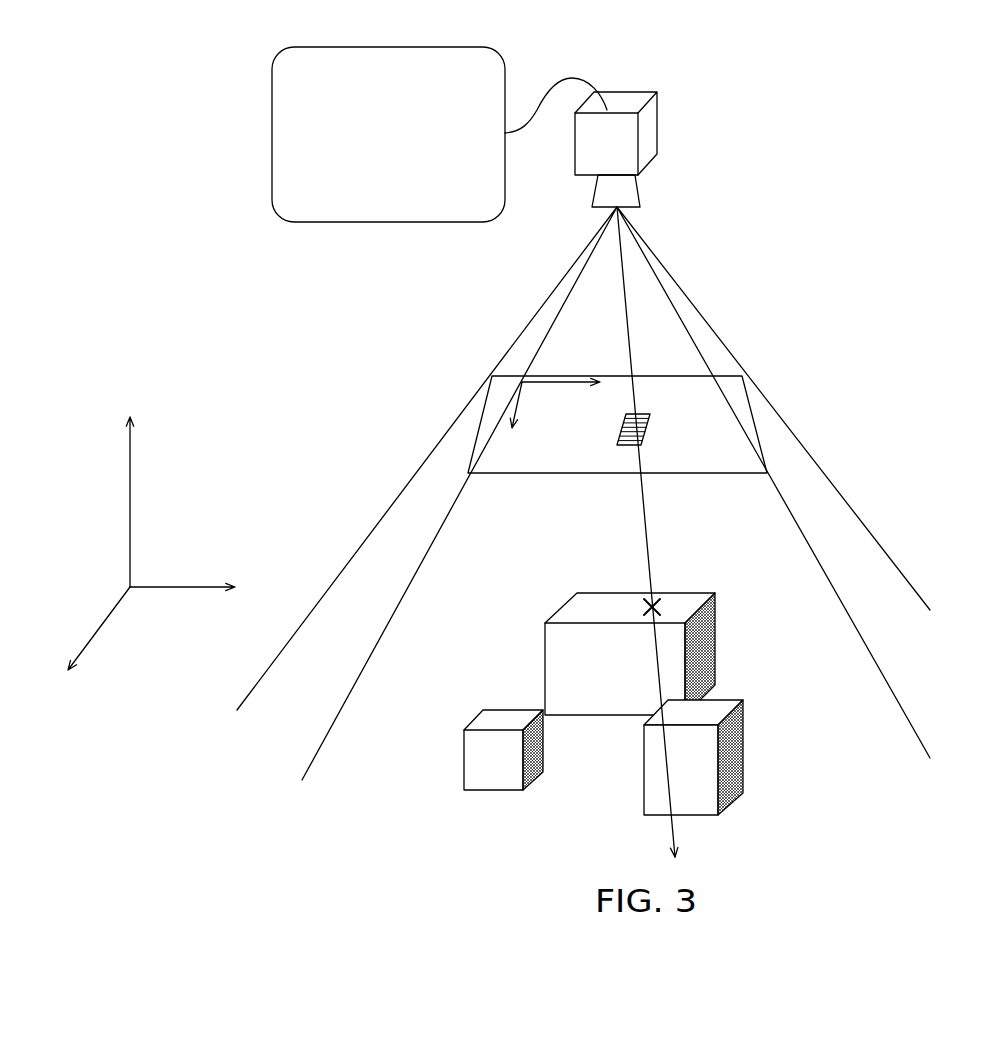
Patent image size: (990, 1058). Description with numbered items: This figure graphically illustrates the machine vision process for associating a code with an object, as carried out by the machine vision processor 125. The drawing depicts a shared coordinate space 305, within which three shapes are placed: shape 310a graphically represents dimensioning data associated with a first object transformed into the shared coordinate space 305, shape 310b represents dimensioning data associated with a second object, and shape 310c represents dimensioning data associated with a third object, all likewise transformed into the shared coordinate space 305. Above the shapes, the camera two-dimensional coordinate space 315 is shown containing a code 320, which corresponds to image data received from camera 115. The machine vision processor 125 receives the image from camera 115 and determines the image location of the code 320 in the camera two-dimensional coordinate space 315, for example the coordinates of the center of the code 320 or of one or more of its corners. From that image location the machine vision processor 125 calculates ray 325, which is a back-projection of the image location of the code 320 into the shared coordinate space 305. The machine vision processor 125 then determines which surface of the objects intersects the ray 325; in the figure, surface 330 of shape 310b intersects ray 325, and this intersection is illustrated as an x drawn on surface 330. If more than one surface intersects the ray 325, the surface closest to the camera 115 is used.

The machine vision processor 125 is at (439, 134).
The camera 115 is at (647, 132).
The camera 2D coordinate space 315 is at (553, 382).
The code 320 is at (637, 447).
The shared coordinate space 305 is at (132, 533).
The ray 325 is at (645, 533).
The surface 330 is at (617, 610).
The shape 310a is at (727, 762).
The shape 310b is at (695, 641).
The shape 310c is at (490, 755).